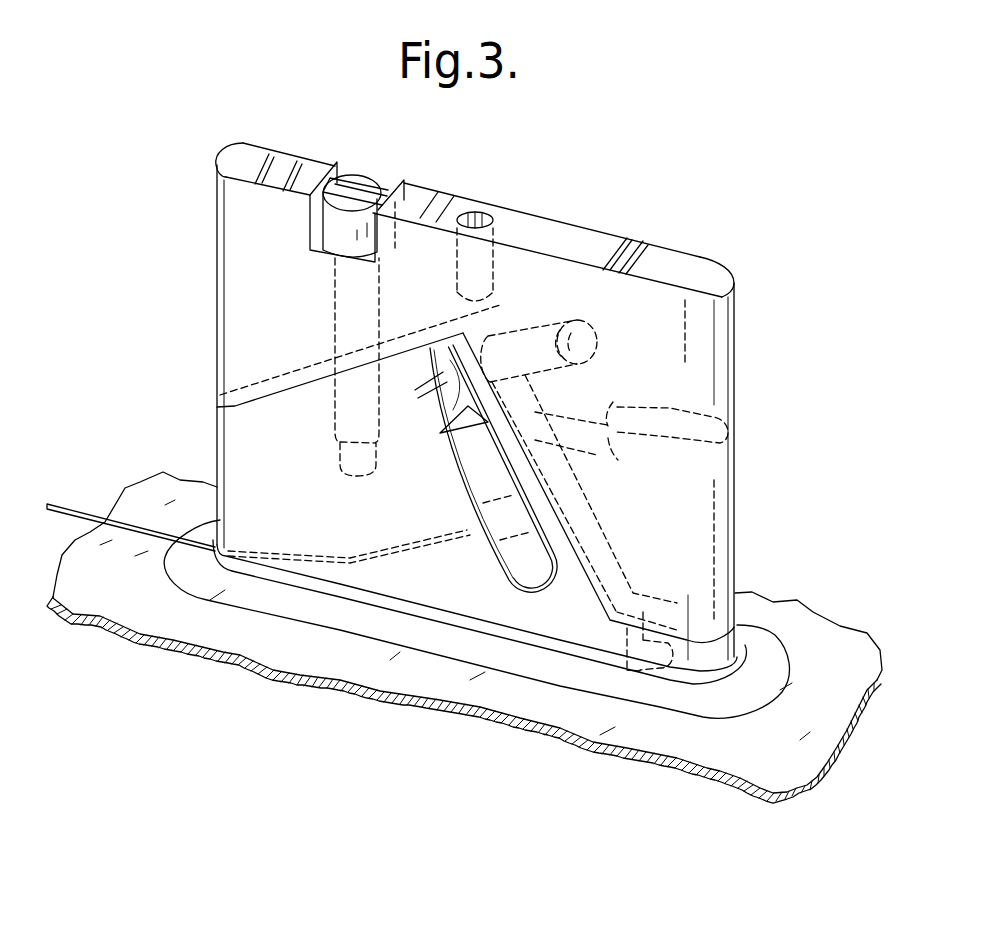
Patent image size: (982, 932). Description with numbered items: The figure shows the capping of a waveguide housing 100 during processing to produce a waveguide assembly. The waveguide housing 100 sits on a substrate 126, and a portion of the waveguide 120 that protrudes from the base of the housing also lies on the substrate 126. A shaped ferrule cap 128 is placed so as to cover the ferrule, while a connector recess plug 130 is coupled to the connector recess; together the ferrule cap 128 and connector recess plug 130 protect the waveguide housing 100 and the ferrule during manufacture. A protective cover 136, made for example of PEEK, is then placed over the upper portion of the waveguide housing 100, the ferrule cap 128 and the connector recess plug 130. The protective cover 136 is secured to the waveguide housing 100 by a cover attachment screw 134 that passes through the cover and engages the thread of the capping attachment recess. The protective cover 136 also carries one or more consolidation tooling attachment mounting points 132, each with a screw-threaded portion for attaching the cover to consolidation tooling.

The waveguide housing 100 is at (243, 457).
The waveguide 120 is at (78, 507).
The substrate 126 is at (730, 745).
The ferrule cap 128 is at (707, 493).
The connector recess plug 130 is at (571, 353).
The consolidation tooling attachment mounting point 132 is at (478, 212).
The cover attachment screw 134 is at (353, 200).
The protective cover 136 is at (242, 272).